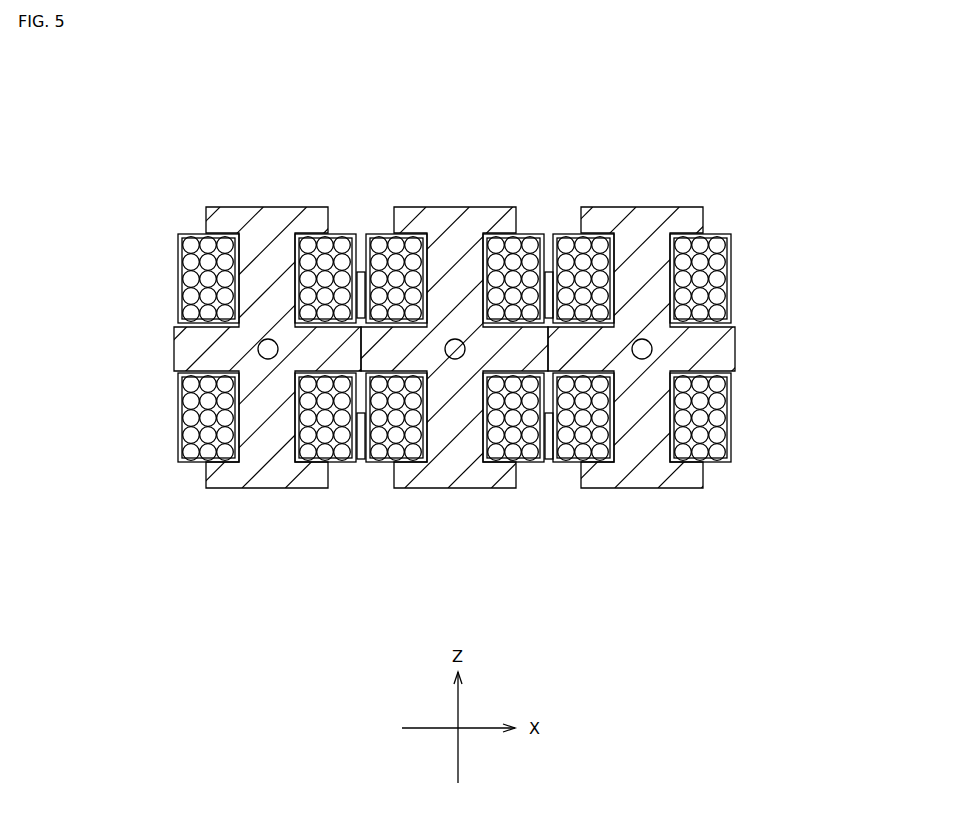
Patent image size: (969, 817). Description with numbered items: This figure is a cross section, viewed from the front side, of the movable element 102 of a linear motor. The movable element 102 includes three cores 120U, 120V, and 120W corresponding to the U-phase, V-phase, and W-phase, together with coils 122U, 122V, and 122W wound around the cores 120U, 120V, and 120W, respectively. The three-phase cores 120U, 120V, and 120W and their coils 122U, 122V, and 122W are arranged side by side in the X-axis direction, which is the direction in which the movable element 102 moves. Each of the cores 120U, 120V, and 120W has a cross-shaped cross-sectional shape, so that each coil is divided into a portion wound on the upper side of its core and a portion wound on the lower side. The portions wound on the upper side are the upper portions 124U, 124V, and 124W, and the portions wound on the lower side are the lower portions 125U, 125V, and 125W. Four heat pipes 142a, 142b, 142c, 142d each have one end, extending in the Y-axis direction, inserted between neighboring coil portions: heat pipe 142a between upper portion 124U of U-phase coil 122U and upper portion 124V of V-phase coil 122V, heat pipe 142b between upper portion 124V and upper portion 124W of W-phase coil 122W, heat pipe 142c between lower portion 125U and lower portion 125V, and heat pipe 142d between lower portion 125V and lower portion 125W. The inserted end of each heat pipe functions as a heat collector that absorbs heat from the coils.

The movable element 102 is at (700, 95).
The U-phase core 120U is at (278, 477).
The V-phase core 120V is at (464, 478).
The W-phase core 120W is at (648, 477).
The U-phase coil 122U is at (93, 303).
The V-phase coil 122V is at (540, 128).
The W-phase coil 122W is at (821, 290).
The upper portion 124U is at (177, 290).
The upper portion 124V is at (523, 233).
The upper portion 124W is at (733, 275).
The lower portion 125U is at (177, 410).
The lower portion 125V is at (507, 392).
The lower portion 125W is at (733, 400).
The heat pipe 142a is at (360, 272).
The heat pipe 142b is at (549, 272).
The heat pipe 142c is at (360, 461).
The heat pipe 142d is at (549, 461).